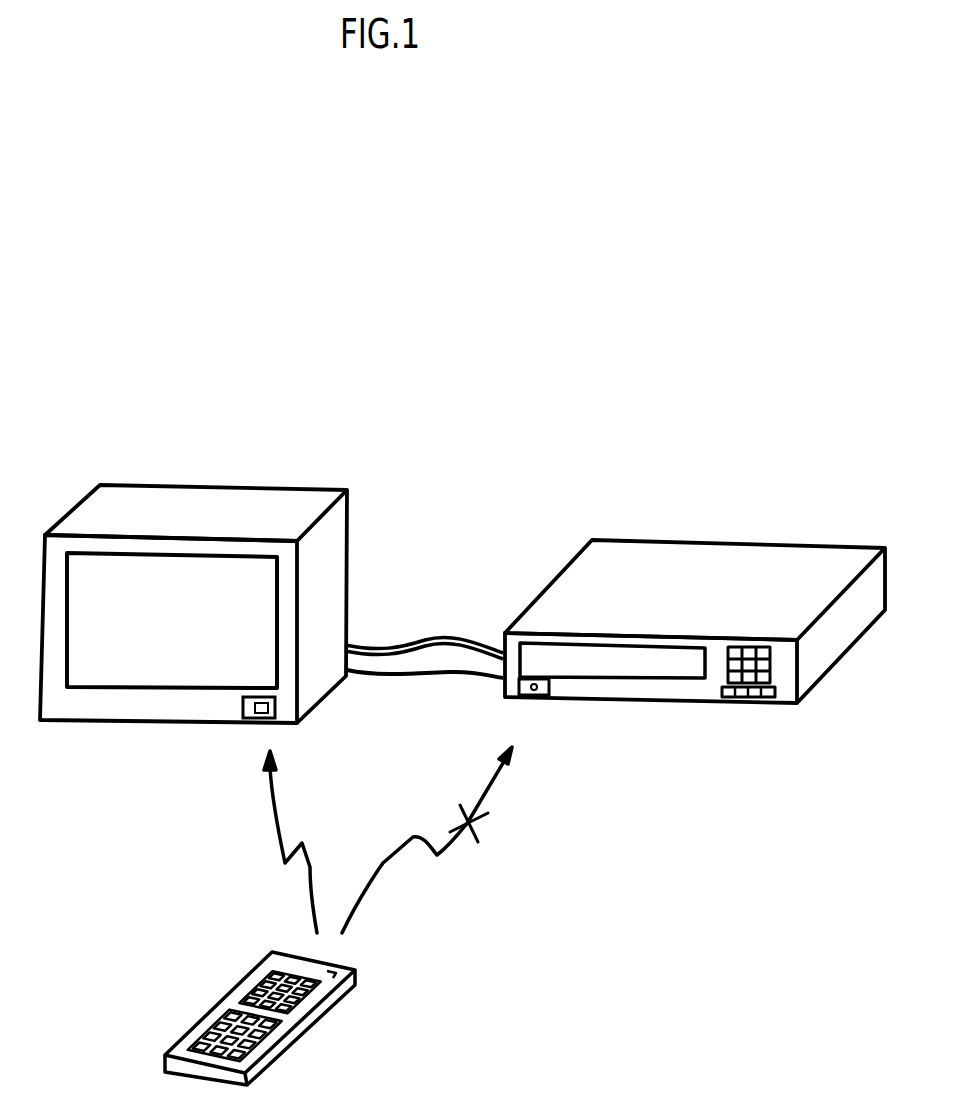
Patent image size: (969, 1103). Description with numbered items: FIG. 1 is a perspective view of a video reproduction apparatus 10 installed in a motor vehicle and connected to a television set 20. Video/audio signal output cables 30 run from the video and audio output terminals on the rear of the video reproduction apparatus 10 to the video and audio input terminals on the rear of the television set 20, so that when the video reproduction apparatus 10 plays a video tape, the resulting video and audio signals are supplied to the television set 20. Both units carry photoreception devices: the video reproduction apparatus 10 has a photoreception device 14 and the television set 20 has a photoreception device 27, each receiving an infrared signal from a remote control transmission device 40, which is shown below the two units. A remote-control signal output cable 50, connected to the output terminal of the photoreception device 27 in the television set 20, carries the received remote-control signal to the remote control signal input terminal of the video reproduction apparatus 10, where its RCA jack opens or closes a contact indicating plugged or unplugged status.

The video reproduction apparatus 10 is at (753, 542).
The photoreception device 14 is at (563, 700).
The television set 20 is at (233, 490).
The photoreception device 27 is at (237, 723).
The video/audio signal output cables 30 is at (422, 640).
The remote control transmission device 40 is at (323, 1012).
The remote-control signal output cable 50 is at (417, 683).